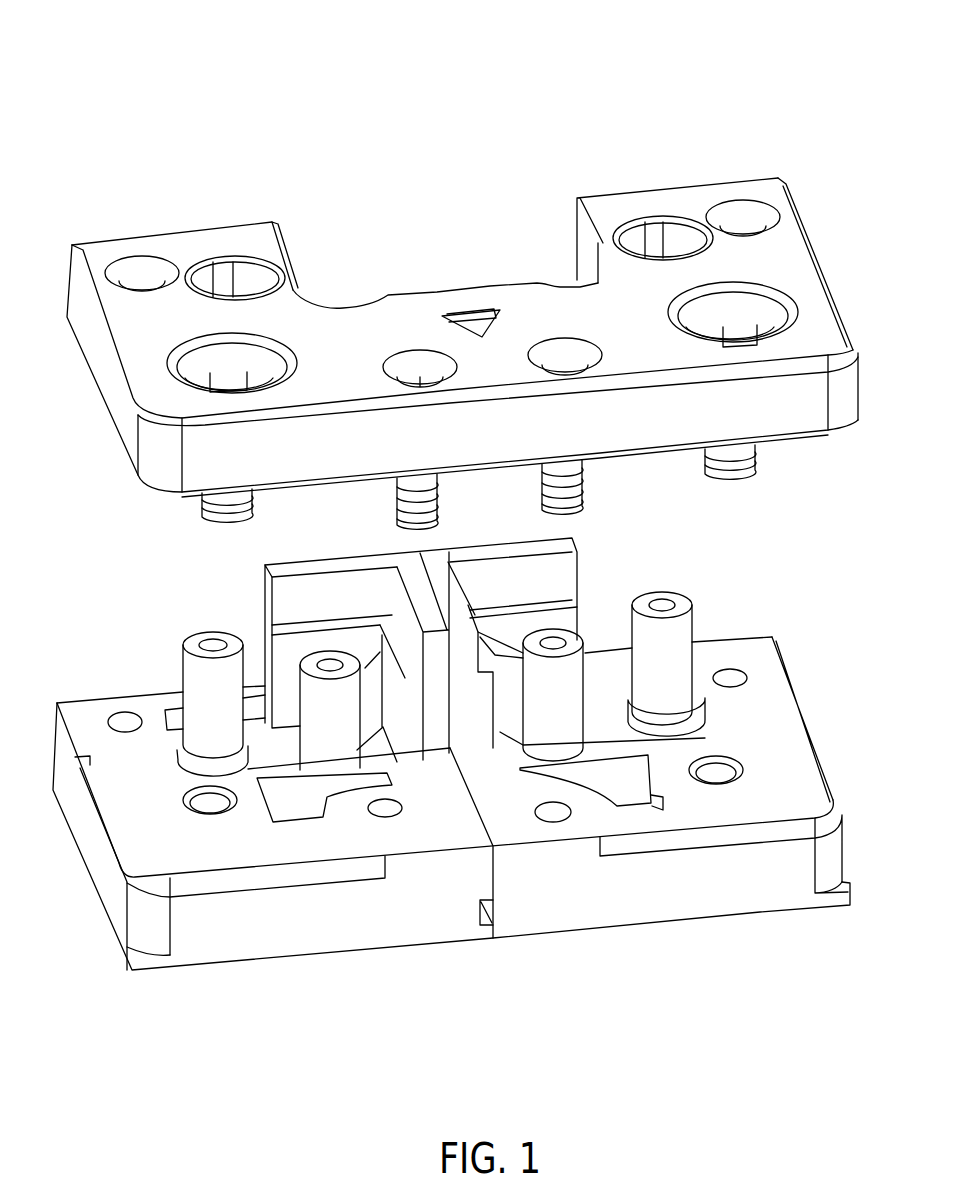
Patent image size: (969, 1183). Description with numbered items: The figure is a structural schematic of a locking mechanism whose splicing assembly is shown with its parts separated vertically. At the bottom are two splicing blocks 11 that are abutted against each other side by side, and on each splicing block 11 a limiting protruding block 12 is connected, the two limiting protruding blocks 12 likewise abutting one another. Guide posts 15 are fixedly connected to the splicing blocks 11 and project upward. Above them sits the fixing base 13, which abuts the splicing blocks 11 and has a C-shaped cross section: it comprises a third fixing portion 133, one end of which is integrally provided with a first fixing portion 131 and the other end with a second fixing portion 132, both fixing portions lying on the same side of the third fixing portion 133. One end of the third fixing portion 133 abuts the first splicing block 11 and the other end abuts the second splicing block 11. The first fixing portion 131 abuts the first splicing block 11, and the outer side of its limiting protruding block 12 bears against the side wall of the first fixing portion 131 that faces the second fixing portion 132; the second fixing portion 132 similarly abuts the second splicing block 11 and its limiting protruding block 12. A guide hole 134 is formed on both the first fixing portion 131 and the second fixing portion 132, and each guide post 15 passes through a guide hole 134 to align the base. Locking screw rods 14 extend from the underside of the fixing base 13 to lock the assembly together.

The splicing block 11 is at (235, 922).
The limiting protruding block 12 is at (310, 608).
The fixing base 13 is at (412, 78).
The first fixing portion 131 is at (200, 250).
The second fixing portion 132 is at (690, 208).
The third fixing portion 133 is at (470, 302).
The guide hole 134 is at (680, 246).
The locking screw rod 14 is at (740, 470).
The guide post 15 is at (675, 655).